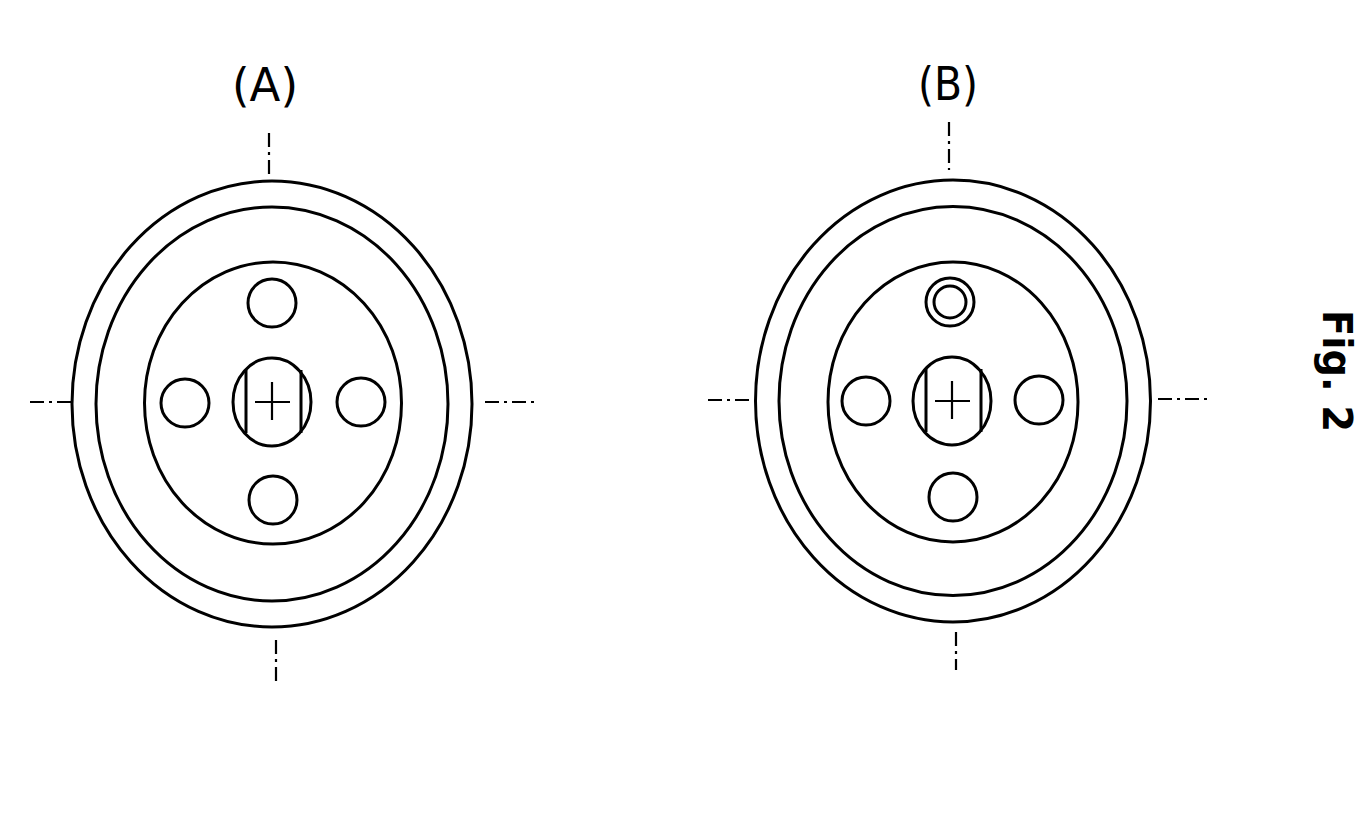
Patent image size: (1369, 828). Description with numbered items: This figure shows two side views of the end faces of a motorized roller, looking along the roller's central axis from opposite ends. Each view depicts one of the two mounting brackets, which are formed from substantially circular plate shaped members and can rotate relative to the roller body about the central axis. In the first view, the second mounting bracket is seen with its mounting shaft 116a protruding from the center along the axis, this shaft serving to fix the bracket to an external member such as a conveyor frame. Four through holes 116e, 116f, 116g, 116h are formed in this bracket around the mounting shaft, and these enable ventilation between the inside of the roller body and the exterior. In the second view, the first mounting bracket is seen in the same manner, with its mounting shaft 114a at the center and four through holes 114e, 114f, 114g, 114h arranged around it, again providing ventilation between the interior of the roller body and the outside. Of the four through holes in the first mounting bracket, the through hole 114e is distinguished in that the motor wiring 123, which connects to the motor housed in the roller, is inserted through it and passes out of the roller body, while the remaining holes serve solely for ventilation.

The mounting shaft 116a is at (285, 378).
The through hole 116e is at (286, 291).
The through hole 116f is at (368, 387).
The through hole 116g is at (286, 516).
The through hole 116h is at (177, 416).
The mounting shaft 114a is at (962, 377).
The through hole 114e is at (957, 298).
The through hole 114f is at (1048, 383).
The through hole 114g is at (964, 511).
The through hole 114h is at (856, 414).
The motor wiring 123 is at (927, 291).